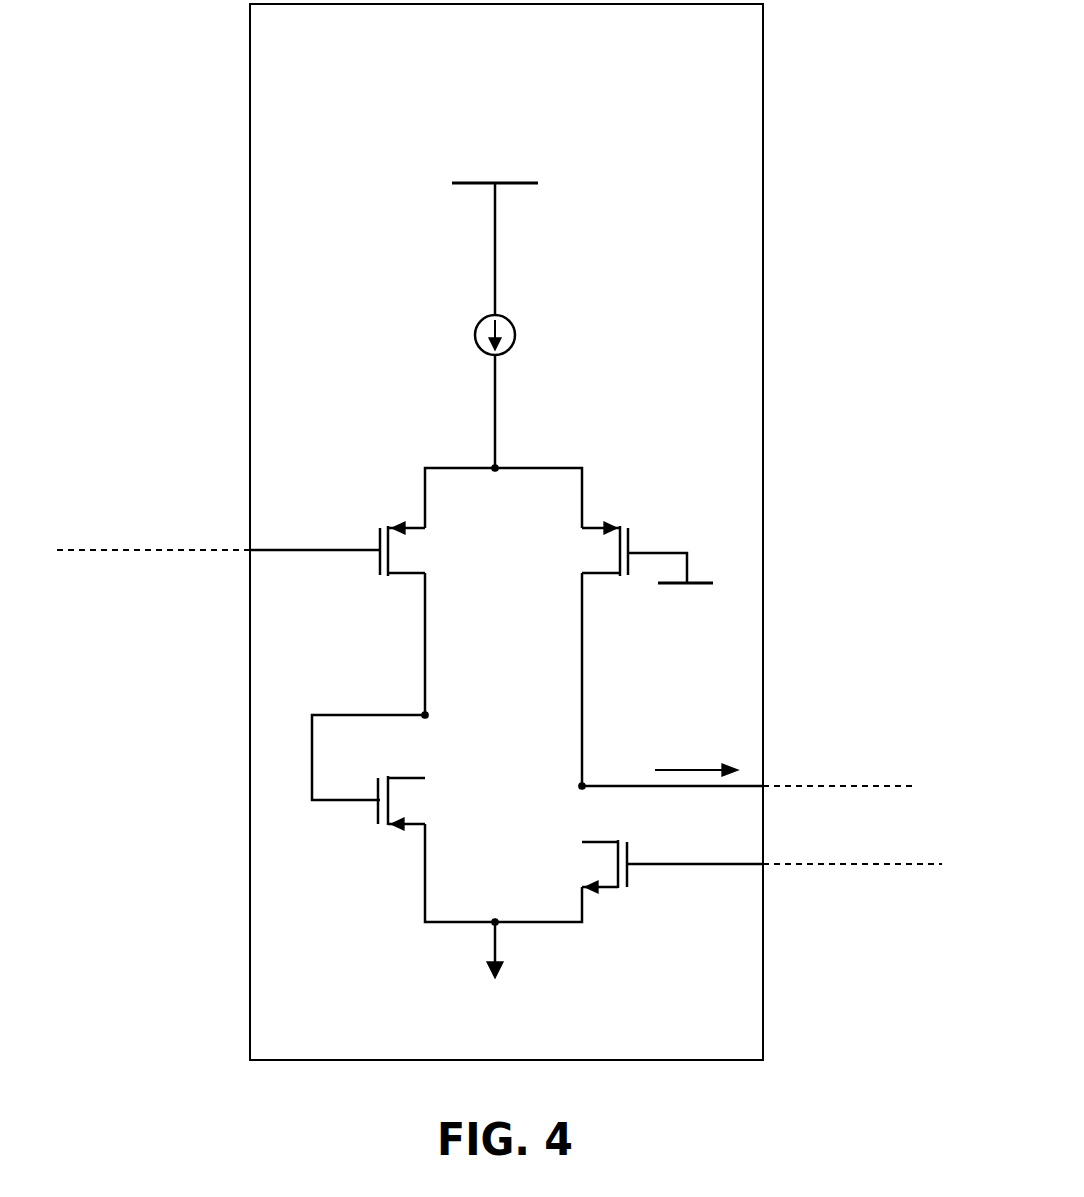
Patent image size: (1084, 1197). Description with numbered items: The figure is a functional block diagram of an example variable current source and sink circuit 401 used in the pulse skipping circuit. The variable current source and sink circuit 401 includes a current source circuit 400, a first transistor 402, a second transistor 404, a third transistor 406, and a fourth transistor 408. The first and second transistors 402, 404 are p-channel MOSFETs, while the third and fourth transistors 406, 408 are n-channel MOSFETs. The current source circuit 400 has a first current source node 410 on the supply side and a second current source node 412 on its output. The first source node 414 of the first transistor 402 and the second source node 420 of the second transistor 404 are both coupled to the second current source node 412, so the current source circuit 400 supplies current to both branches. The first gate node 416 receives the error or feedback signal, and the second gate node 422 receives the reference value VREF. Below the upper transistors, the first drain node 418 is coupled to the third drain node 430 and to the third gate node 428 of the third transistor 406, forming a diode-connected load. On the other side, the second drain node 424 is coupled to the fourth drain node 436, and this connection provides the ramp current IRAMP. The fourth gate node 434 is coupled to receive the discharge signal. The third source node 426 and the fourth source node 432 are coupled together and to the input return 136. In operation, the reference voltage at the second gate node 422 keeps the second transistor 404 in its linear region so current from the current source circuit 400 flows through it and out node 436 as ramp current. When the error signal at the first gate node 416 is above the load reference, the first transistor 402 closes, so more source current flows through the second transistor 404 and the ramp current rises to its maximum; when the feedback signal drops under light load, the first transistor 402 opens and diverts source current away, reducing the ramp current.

The variable current source and sink circuit 401 is at (530, 105).
The current source circuit 400 is at (525, 335).
The first current source node 410 is at (487, 228).
The second current source node 412 is at (487, 422).
The first source node 414 is at (418, 485).
The second source node 420 is at (588, 486).
The first transistor 402 is at (400, 556).
The second transistor 404 is at (605, 556).
The first gate node 416 is at (300, 538).
The second gate node 422 is at (681, 543).
The first drain node 418 is at (415, 628).
The third drain node 430 is at (415, 676).
The second drain node 424 is at (577, 616).
The third gate node 428 is at (305, 768).
The third transistor 406 is at (403, 802).
The fourth drain node 436 is at (575, 735).
The fourth transistor 408 is at (603, 870).
The fourth gate node 434 is at (723, 873).
The third source node 426 is at (418, 884).
The fourth source node 432 is at (587, 908).
The input return 136 is at (473, 960).